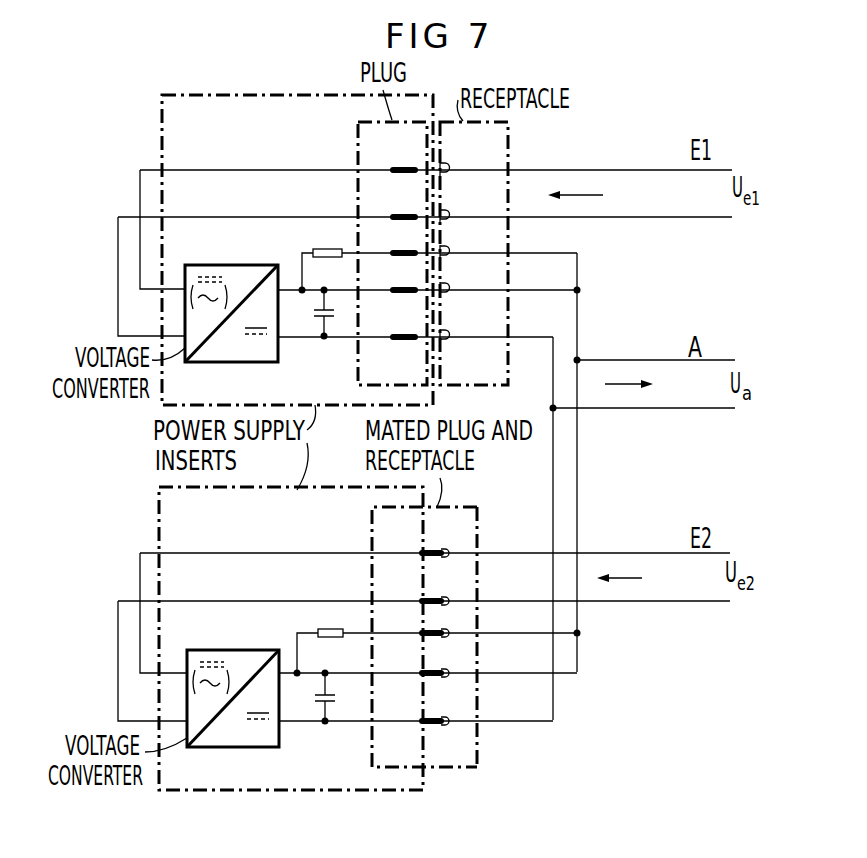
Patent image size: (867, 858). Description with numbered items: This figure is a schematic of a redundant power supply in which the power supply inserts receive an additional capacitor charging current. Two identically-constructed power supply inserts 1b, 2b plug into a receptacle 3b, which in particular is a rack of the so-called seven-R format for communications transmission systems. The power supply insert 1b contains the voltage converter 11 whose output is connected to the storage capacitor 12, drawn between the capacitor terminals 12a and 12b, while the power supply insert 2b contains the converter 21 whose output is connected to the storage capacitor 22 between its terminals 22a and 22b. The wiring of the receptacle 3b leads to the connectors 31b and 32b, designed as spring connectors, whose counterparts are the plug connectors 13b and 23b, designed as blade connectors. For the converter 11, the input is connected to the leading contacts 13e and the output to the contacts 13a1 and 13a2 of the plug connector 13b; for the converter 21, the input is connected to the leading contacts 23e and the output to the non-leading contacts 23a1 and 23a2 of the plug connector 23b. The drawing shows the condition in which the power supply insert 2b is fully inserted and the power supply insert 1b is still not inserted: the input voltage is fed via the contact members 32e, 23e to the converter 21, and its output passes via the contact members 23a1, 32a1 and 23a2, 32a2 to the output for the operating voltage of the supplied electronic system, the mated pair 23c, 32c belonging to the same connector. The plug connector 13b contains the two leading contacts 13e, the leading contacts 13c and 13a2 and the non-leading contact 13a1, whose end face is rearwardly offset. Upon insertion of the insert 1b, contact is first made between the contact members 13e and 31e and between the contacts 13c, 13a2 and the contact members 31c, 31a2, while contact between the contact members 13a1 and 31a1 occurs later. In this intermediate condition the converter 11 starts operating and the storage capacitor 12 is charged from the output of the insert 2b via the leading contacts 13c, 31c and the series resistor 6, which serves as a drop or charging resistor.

The power supply insert 1b is at (175, 140).
The power supply insert 2b is at (175, 522).
The receptacle 3b is at (657, 297).
The resistor 6 is at (318, 250).
The voltage converter 11 is at (228, 364).
The storage capacitor 12 is at (316, 313).
The capacitor terminal 12a is at (324, 289).
The capacitor terminal 12b is at (324, 339).
The plug connector 13b is at (364, 142).
The leading contacts 13e is at (398, 212).
The leading contact 13c is at (400, 250).
The non-leading contact 13a1 is at (398, 294).
The leading contact 13a2 is at (398, 341).
The connector 31b is at (506, 132).
The contact members 31e is at (460, 188).
The contact member 31c is at (444, 250).
The contact member 31a1 is at (445, 296).
The contact member 31a2 is at (445, 343).
The converter 21 is at (237, 748).
The storage capacitor 22 is at (316, 696).
The capacitor terminal 22a is at (325, 672).
The capacitor terminal 22b is at (325, 723).
The plug connector 23b is at (372, 520).
The leading contacts 23e is at (420, 595).
The plug contact 23c is at (420, 630).
The non-leading contact 23a1 is at (420, 677).
The non-leading contact 23a2 is at (420, 725).
The connector 32b is at (478, 512).
The contact members 32e is at (440, 572).
The receptacle contact 32c is at (446, 622).
The contact member 32a1 is at (447, 677).
The contact member 32a2 is at (447, 725).